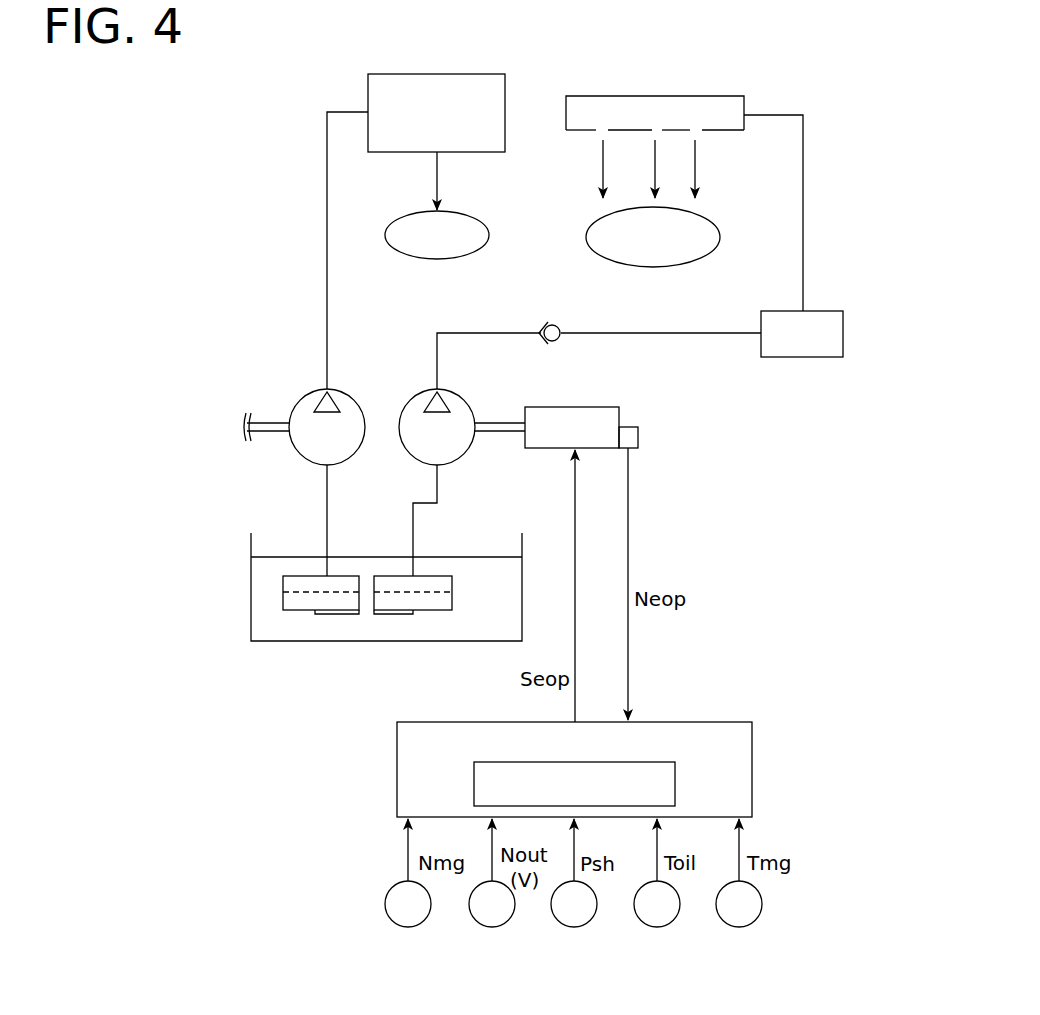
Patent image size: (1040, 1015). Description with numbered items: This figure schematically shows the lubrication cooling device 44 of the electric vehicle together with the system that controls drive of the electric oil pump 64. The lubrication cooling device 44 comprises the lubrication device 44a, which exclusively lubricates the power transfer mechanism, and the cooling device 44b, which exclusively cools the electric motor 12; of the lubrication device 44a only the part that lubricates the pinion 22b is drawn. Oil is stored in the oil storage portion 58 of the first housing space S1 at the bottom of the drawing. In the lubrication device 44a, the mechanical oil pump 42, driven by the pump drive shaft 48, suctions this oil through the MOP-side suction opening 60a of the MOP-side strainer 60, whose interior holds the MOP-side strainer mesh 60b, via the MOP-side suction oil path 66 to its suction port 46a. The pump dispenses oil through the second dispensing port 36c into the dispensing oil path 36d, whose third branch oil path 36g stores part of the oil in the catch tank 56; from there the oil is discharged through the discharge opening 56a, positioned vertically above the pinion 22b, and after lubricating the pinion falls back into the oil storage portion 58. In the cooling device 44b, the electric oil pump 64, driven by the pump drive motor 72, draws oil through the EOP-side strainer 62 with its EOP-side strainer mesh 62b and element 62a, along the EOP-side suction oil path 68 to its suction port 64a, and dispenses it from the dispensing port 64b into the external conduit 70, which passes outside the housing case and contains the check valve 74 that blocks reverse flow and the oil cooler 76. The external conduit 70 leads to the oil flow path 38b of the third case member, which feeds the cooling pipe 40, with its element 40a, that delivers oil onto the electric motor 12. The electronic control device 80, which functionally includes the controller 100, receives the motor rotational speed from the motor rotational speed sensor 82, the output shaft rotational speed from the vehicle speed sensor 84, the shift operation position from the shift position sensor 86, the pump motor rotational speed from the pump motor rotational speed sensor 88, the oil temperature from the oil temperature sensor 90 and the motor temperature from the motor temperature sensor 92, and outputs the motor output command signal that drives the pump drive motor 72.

The electric motor 12 is at (712, 235).
The pinion 22b is at (455, 238).
The second dispensing port 36c is at (325, 388).
The dispensing oil path 36d is at (327, 258).
The third branch oil path 36g is at (366, 110).
The oil flow path 38b is at (758, 112).
The cooling pipe 40 is at (622, 105).
The supply hole 40a is at (668, 118).
The mechanical oil pump 42 is at (304, 418).
The lubrication cooling device 44 is at (548, 45).
The lubrication device 44a is at (258, 247).
The cooling device 44b is at (742, 430).
The suction port 46a is at (331, 466).
The pump drive shaft 48 is at (268, 435).
The catch tank 56 is at (455, 85).
The discharge opening 56a is at (435, 137).
The oil storage portion 58 is at (486, 616).
The MOP-side strainer 60 is at (318, 573).
The MOP-side suction opening 60a is at (336, 614).
The MOP-side strainer mesh 60b is at (297, 592).
The EOP-side strainer 62 is at (428, 571).
The strainer inlet 62a is at (390, 614).
The EOP-side strainer mesh 62b is at (429, 592).
The electric oil pump 64 is at (463, 405).
The suction port 64a is at (441, 466).
The dispensing port 64b is at (435, 388).
The MOP-side suction oil path 66 is at (327, 500).
The EOP-side suction oil path 68 is at (413, 543).
The external conduit 70 is at (646, 335).
The pump drive motor 72 is at (600, 412).
The check valve 74 is at (553, 346).
The oil cooler 76 is at (808, 342).
The electronic control device 80 is at (697, 735).
The pump motor rotational speed sensor 88 is at (633, 437).
The controller 100 is at (668, 790).
The motor rotational speed sensor 82 is at (409, 912).
The vehicle speed sensor 84 is at (494, 912).
The shift position sensor 86 is at (576, 912).
The oil temperature sensor 90 is at (659, 912).
The motor temperature sensor 92 is at (741, 912).
The first housing space S1 is at (500, 555).